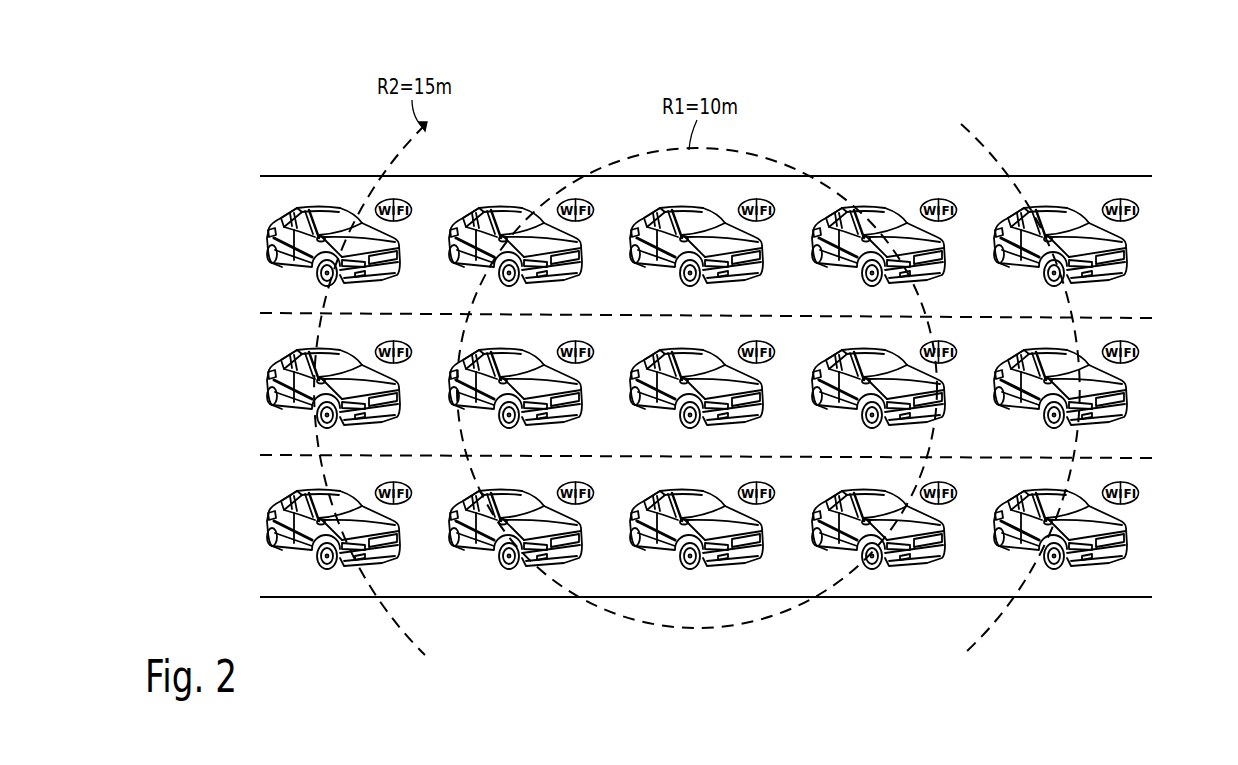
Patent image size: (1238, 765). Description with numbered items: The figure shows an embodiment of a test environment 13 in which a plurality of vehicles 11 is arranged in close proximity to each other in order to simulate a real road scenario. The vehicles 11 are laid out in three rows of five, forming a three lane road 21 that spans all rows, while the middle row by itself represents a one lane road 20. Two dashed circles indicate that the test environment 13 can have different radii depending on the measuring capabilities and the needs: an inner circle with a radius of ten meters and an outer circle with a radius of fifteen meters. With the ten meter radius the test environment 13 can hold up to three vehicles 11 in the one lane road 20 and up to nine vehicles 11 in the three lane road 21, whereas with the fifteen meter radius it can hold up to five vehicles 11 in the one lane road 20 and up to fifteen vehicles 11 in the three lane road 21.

The vehicles 11 is at (675, 569).
The test environment 13 is at (1110, 101).
The one lane road 20 is at (246, 315).
The three lane road 21 is at (1166, 177).